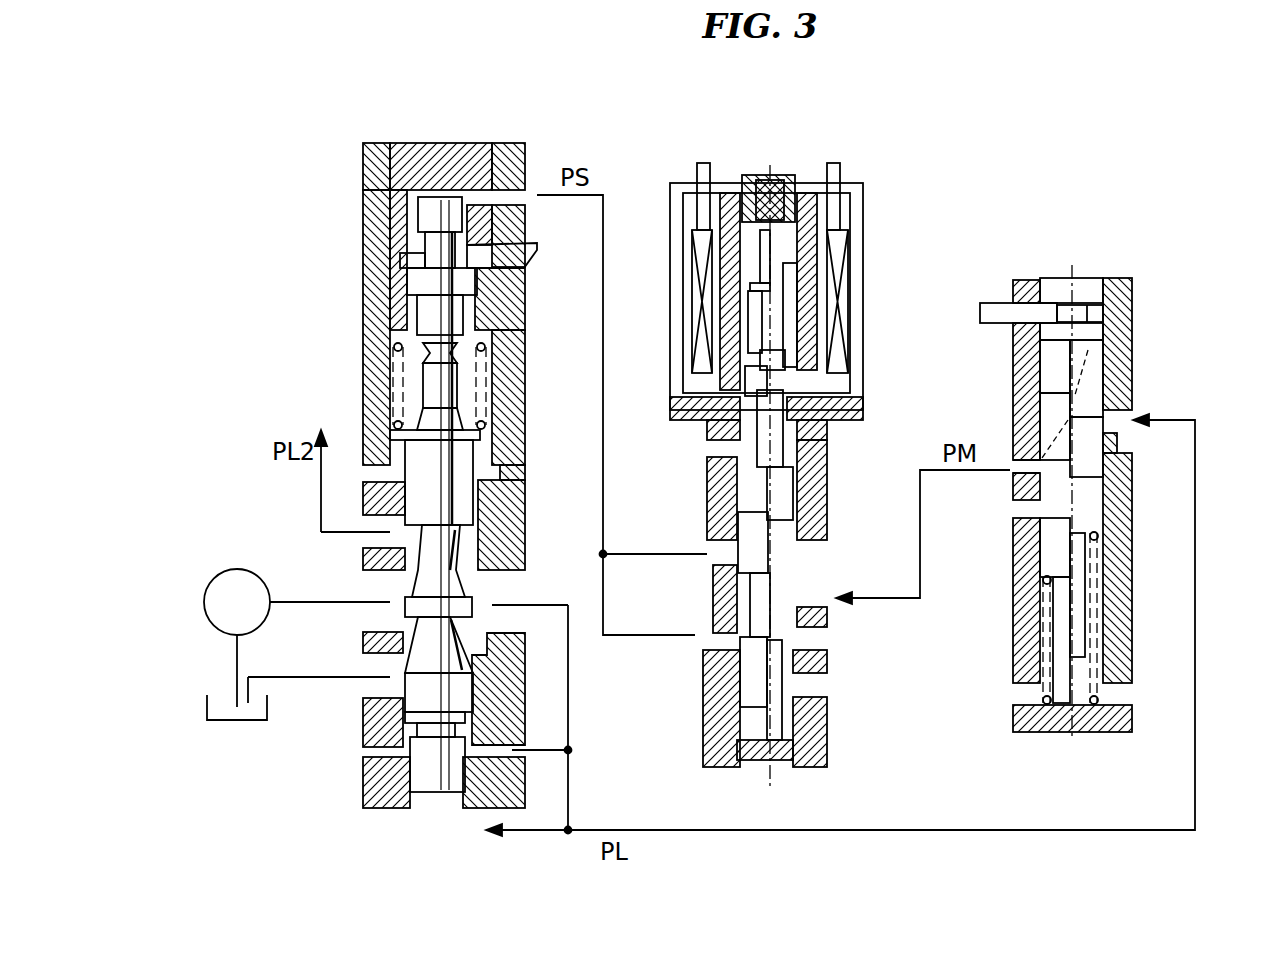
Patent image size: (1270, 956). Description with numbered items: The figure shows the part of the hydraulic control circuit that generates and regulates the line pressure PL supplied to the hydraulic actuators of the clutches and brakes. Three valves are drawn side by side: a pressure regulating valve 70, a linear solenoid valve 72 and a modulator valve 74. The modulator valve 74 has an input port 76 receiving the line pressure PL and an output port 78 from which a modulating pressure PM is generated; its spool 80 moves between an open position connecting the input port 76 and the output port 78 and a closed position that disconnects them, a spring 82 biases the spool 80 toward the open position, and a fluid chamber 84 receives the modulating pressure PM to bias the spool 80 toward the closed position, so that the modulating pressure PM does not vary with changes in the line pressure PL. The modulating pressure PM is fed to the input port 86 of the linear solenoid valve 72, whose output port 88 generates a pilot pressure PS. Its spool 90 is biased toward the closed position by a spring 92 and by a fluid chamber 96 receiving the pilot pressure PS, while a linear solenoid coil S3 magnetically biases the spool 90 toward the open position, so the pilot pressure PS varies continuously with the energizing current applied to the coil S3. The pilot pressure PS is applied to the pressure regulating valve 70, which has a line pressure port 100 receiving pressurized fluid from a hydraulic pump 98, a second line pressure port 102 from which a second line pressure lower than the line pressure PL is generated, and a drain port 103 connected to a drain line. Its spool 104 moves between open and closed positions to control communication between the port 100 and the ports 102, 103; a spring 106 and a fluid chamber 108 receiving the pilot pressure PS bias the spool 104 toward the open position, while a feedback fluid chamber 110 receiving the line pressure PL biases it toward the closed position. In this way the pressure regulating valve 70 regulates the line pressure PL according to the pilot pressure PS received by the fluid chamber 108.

The pressure regulating valve 70 is at (424, 475).
The linear solenoid valve 72 is at (776, 432).
The modulator valve 74 is at (1062, 462).
The input port 76 is at (1128, 410).
The output port 78 is at (1012, 478).
The spool 80 is at (1048, 565).
The spring 82 is at (1108, 540).
The fluid chamber 84 is at (1045, 375).
The input port 86 is at (822, 600).
The output port 88 is at (715, 548).
The spool 90 is at (793, 512).
The spring 92 is at (793, 672).
The fluid chamber 96 is at (718, 653).
The hydraulic pump 98 is at (231, 568).
The line pressure port 100 is at (493, 585).
The second line pressure port 102 is at (372, 520).
The drain port 103 is at (372, 685).
The spool 104 is at (492, 537).
The spring 106 is at (493, 356).
The fluid chamber 108 is at (385, 186).
The feedback fluid chamber 110 is at (387, 750).
The linear solenoid coil S3 is at (847, 311).